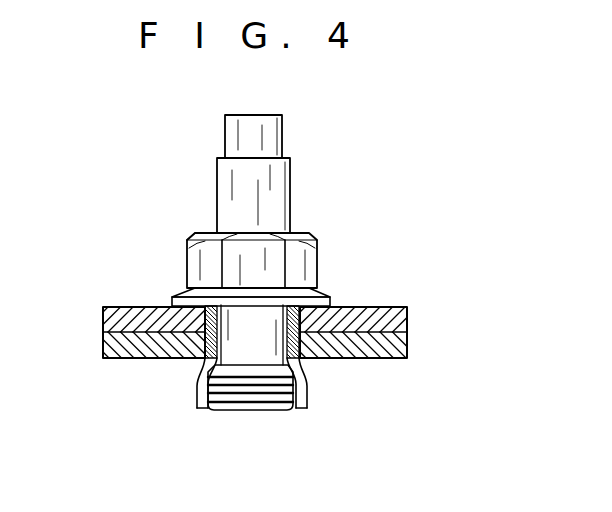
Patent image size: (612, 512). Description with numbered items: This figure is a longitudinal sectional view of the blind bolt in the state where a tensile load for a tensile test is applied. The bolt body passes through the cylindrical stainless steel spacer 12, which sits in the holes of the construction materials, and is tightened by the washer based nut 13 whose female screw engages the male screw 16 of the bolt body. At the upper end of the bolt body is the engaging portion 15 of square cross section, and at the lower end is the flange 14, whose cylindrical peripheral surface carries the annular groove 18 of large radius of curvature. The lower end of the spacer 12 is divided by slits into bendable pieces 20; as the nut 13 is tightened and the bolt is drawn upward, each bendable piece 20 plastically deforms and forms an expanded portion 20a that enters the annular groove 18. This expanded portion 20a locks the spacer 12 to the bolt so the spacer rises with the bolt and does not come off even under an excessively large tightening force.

The spacer 12 is at (333, 300).
The washer based nut 13 is at (308, 258).
The flange 14 is at (290, 409).
The engaging portion 15 is at (282, 129).
The male screw 16 is at (290, 192).
The annular groove 18 is at (295, 392).
The bendable piece 20 is at (197, 375).
The expanded portion 20a is at (202, 410).